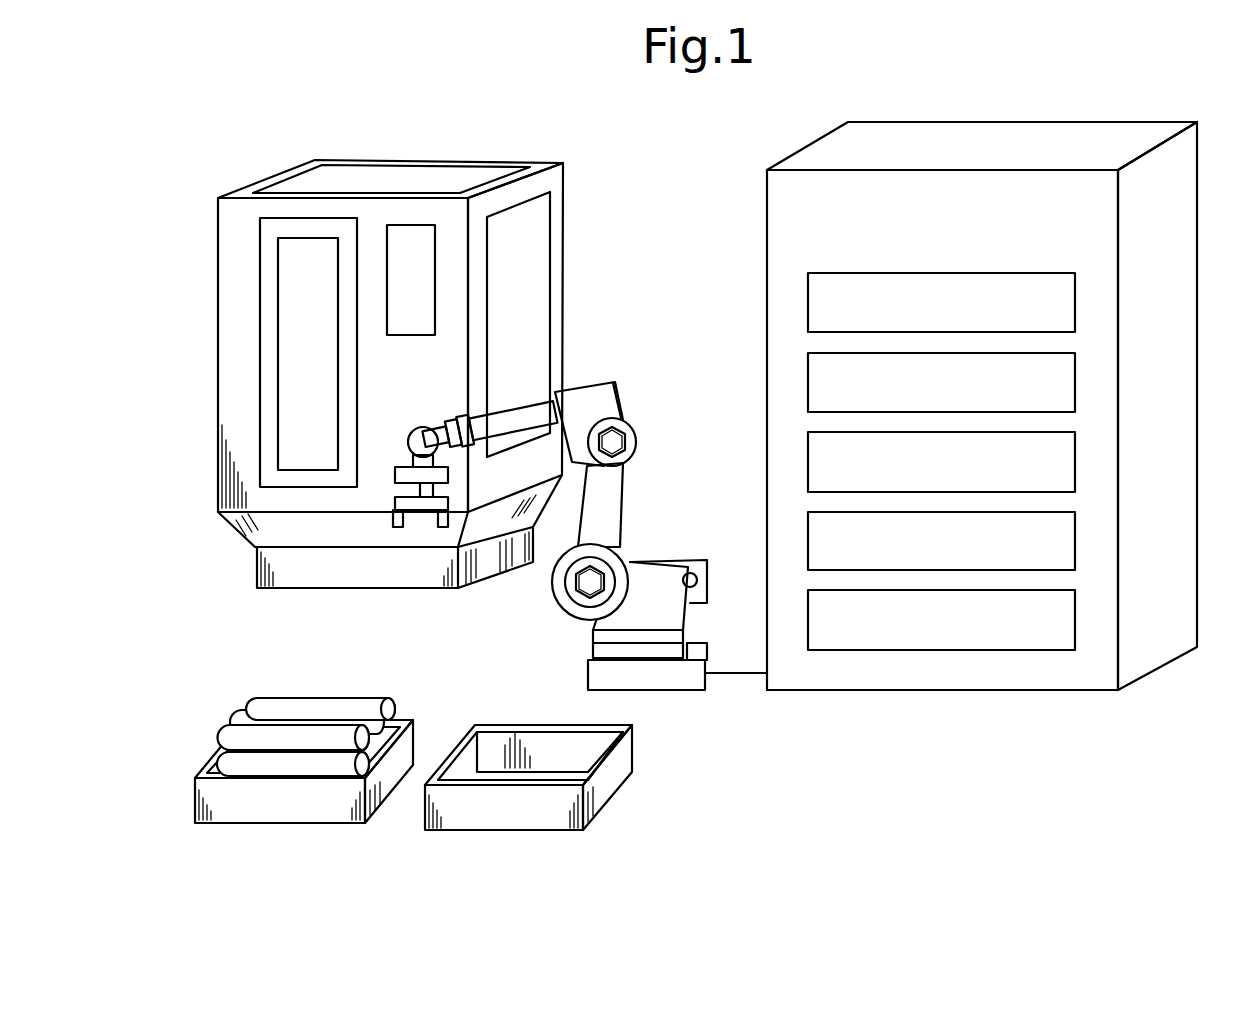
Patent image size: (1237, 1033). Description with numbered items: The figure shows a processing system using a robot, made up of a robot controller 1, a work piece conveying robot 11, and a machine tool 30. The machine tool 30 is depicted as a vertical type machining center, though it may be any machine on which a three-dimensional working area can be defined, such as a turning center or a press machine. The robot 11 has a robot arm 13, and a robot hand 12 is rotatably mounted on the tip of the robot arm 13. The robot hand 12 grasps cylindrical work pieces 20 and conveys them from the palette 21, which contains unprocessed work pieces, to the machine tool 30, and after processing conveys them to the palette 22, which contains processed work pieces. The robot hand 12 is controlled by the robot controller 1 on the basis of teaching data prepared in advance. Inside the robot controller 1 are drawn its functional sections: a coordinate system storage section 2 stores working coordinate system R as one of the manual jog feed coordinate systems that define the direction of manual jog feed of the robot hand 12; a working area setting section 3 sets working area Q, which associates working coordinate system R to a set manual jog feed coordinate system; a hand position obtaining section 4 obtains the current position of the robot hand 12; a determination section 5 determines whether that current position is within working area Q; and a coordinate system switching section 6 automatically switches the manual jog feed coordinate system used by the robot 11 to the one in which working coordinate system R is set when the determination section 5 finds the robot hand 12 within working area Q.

The robot controller 1 is at (982, 137).
The coordinate system storage section 2 is at (1075, 300).
The working area setting section 3 is at (1075, 378).
The hand position obtaining section 4 is at (1075, 452).
The determination section 5 is at (1075, 531).
The coordinate system switching section 6 is at (1075, 613).
The work piece conveying robot 11 is at (623, 390).
The robot hand 12 is at (458, 500).
The robot arm 13 is at (502, 413).
The cylindrical work pieces 20 is at (313, 695).
The palette 21 is at (272, 823).
The palette 22 is at (492, 832).
The machine tool 30 is at (452, 157).